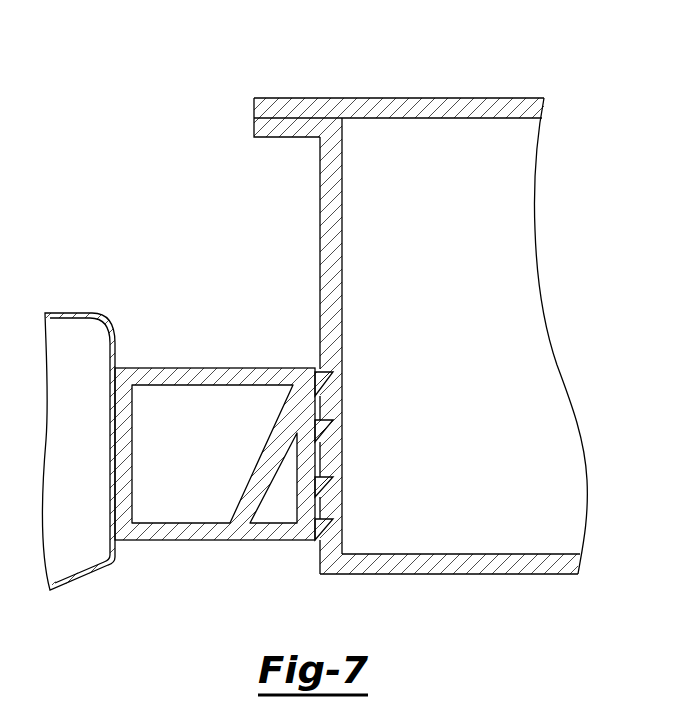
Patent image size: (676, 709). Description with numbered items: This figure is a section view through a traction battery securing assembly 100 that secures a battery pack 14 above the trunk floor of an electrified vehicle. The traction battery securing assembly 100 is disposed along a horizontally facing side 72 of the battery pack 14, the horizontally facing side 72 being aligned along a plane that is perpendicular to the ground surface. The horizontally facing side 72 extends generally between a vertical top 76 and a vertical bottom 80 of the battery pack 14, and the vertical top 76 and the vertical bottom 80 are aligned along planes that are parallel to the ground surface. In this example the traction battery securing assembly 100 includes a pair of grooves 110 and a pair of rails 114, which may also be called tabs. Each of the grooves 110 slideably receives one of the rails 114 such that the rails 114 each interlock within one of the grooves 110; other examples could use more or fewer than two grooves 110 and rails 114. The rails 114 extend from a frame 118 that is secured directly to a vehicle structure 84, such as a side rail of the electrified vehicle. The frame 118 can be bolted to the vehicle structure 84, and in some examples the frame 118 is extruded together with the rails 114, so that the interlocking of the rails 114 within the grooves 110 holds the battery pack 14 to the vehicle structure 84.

The battery pack 14 is at (419, 331).
The horizontally facing side 72 is at (322, 190).
The vertical top 76 is at (318, 97).
The vertical bottom 80 is at (483, 574).
The vehicle structure 84 is at (70, 312).
The traction battery securing assembly 100 is at (184, 280).
The groove 110 is at (334, 391).
The rail 114 is at (321, 412).
The frame 118 is at (266, 493).